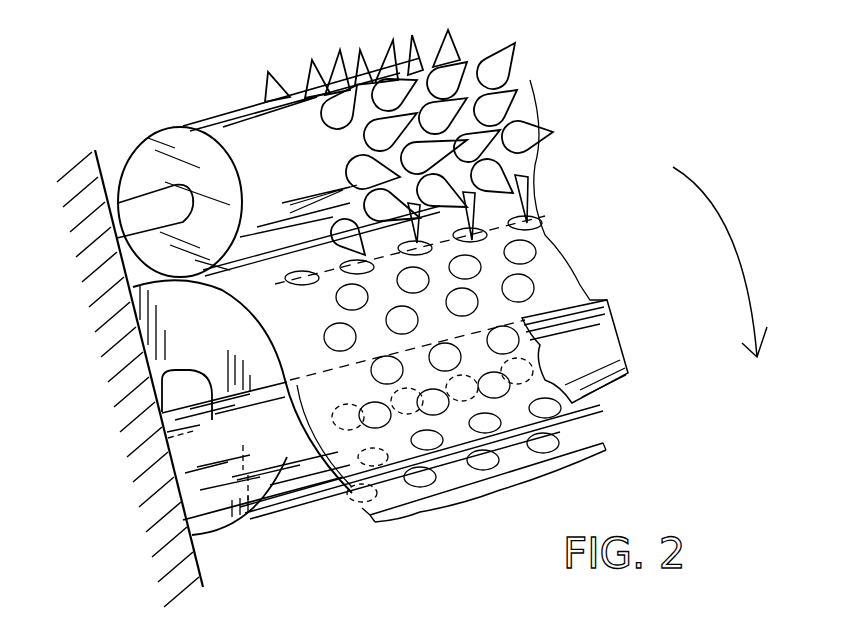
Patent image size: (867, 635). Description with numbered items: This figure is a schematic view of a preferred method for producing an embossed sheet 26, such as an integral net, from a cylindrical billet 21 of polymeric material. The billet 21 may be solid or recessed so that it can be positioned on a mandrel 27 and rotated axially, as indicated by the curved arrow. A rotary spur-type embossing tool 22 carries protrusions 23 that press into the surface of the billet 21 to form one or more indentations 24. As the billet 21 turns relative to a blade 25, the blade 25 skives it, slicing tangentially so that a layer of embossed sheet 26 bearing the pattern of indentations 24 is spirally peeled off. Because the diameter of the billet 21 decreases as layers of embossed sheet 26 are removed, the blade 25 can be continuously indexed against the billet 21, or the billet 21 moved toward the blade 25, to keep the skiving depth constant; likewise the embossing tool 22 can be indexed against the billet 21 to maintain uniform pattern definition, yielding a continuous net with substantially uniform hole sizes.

The billet 21 is at (213, 517).
The embossing tool 22 is at (193, 130).
The protrusions 23 is at (517, 93).
The indentations 24 is at (522, 252).
The blade 25 is at (602, 335).
The embossed sheet 26 is at (486, 483).
The mandrel 27 is at (165, 386).